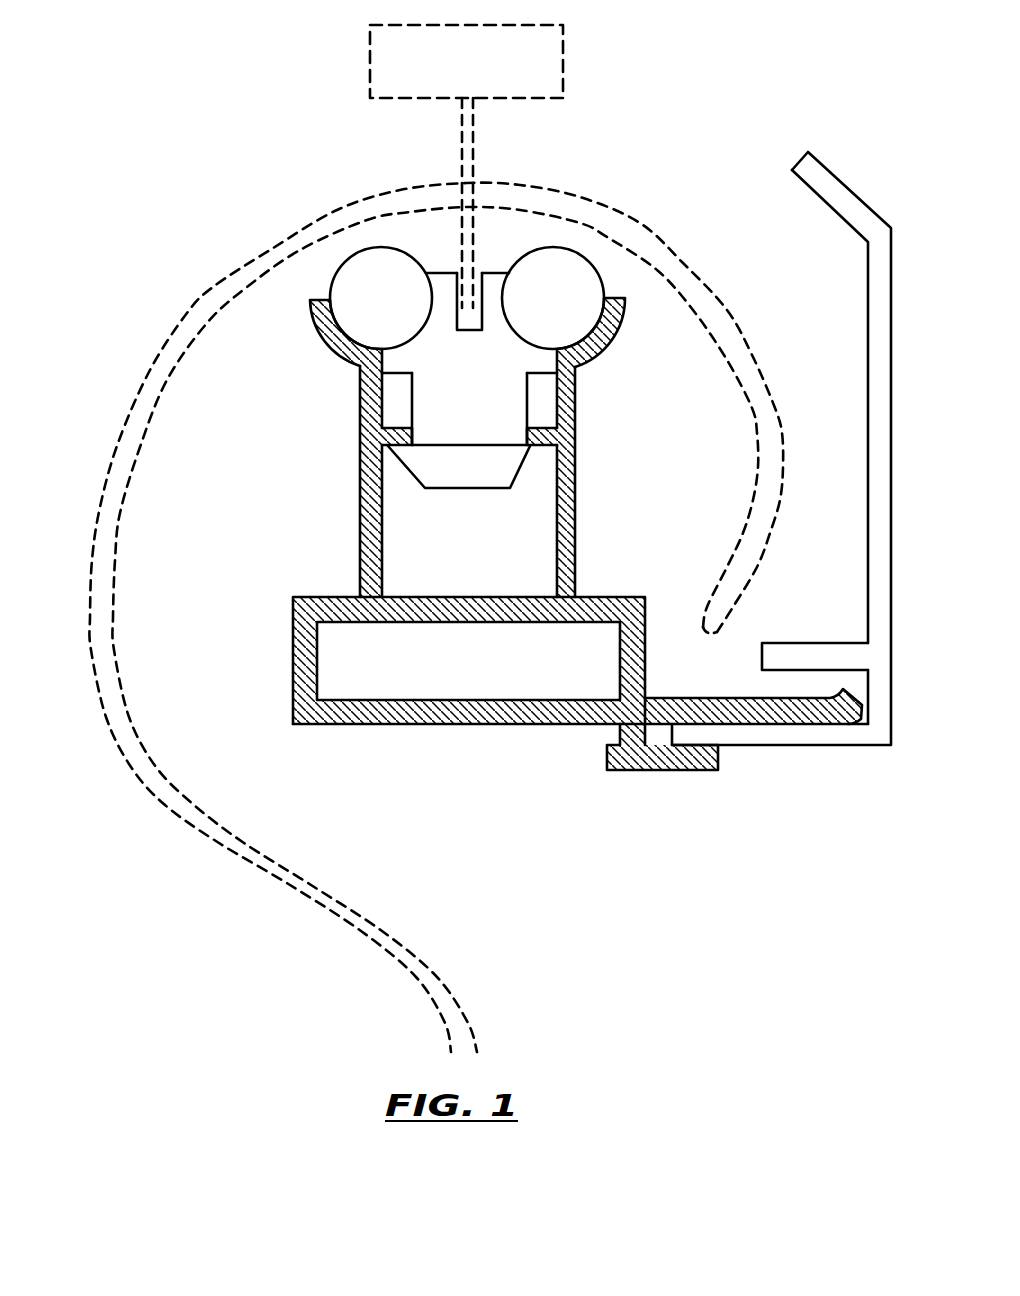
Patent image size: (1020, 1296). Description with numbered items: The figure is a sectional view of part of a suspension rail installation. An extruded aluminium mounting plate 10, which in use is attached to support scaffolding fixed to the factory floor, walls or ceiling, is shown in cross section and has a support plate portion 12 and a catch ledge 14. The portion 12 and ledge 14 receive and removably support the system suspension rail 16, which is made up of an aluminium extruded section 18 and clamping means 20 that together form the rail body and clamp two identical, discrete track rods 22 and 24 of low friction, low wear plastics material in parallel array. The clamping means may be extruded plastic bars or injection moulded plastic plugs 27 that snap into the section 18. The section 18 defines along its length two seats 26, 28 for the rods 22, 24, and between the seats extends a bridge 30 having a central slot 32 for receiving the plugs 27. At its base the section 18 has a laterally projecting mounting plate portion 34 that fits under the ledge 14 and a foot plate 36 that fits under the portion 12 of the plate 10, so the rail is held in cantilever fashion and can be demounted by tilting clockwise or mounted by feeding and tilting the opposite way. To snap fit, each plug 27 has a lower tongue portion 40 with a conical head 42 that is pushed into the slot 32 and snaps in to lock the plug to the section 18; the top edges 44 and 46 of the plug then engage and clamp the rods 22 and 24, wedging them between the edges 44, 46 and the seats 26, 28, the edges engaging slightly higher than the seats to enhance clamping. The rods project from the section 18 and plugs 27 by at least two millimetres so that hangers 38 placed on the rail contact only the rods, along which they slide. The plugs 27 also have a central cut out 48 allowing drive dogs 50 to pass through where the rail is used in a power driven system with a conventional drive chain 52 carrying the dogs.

The mounting plate 10 is at (781, 511).
The support plate portion 12 is at (775, 732).
The catch ledge 14 is at (778, 655).
The system suspension rail 16 is at (458, 503).
The aluminium extruded section 18 is at (320, 596).
The clamping means 20 is at (540, 393).
The track rod 22 is at (367, 283).
The track rod 24 is at (588, 283).
The seat 26 is at (327, 352).
The plug 27 is at (465, 407).
The seat 28 is at (610, 340).
The bridge 30 is at (510, 465).
The central slot 32 is at (390, 437).
The mounting plate portion 34 is at (723, 715).
The foot plate 36 is at (653, 758).
The hanger 38 is at (112, 502).
The lower tongue portion 40 is at (467, 438).
The conical head 42 is at (577, 508).
The top edge 44 is at (458, 274).
The top edge 46 is at (486, 275).
The central cut out 48 is at (434, 276).
The drive dog 50 is at (470, 148).
The drive chain 52 is at (402, 42).